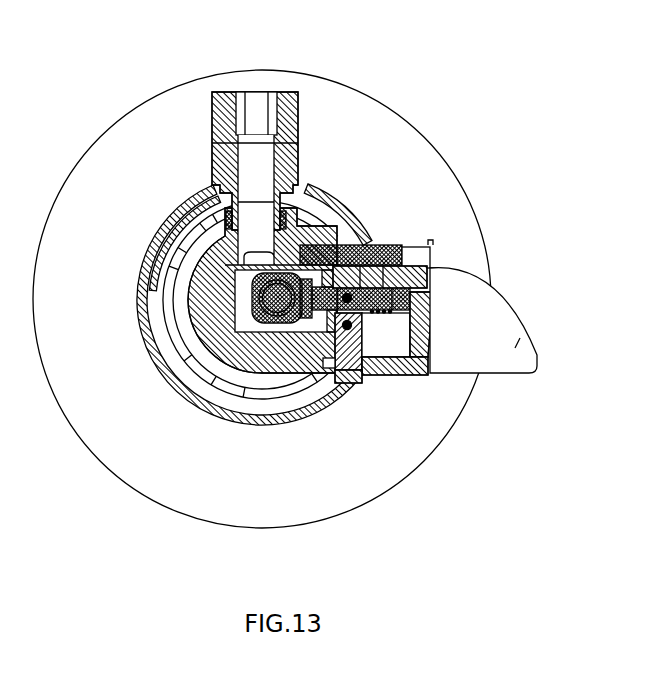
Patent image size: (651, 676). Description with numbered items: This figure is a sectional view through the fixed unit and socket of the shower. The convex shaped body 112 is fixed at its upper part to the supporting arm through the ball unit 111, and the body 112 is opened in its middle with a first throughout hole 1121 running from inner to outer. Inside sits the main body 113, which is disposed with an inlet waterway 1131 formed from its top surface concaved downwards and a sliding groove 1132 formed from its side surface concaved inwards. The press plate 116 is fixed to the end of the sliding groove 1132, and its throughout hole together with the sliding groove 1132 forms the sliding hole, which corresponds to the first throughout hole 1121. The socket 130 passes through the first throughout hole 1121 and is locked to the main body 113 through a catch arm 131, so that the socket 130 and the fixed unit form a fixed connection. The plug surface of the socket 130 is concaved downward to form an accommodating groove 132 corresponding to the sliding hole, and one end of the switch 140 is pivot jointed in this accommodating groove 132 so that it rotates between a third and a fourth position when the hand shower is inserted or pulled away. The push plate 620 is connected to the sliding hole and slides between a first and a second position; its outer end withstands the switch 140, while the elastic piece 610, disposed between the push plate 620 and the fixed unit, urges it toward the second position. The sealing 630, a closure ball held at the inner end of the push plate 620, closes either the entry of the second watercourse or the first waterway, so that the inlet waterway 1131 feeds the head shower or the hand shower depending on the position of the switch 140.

The ball unit 111 is at (212, 125).
The inlet waterway 1131 is at (198, 197).
The sealing 630 is at (246, 217).
The sliding groove 1132 is at (245, 313).
The main body 113 is at (222, 387).
The body 112 is at (212, 422).
The catch arm 131 is at (325, 380).
The first throughout hole 1121 is at (355, 373).
The press plate 116 is at (377, 343).
The accommodating groove 132 is at (397, 373).
The socket 130 is at (509, 302).
The switch 140 is at (428, 313).
The elastic piece 610 is at (405, 248).
The push plate 620 is at (369, 247).